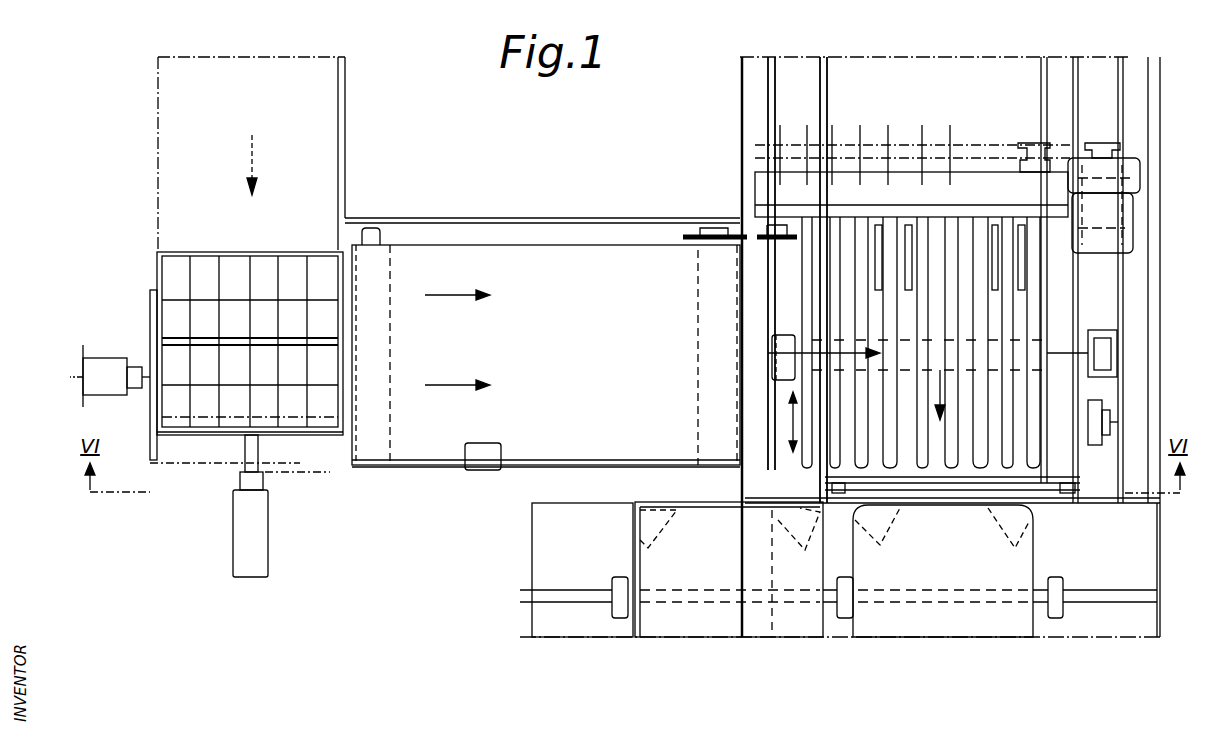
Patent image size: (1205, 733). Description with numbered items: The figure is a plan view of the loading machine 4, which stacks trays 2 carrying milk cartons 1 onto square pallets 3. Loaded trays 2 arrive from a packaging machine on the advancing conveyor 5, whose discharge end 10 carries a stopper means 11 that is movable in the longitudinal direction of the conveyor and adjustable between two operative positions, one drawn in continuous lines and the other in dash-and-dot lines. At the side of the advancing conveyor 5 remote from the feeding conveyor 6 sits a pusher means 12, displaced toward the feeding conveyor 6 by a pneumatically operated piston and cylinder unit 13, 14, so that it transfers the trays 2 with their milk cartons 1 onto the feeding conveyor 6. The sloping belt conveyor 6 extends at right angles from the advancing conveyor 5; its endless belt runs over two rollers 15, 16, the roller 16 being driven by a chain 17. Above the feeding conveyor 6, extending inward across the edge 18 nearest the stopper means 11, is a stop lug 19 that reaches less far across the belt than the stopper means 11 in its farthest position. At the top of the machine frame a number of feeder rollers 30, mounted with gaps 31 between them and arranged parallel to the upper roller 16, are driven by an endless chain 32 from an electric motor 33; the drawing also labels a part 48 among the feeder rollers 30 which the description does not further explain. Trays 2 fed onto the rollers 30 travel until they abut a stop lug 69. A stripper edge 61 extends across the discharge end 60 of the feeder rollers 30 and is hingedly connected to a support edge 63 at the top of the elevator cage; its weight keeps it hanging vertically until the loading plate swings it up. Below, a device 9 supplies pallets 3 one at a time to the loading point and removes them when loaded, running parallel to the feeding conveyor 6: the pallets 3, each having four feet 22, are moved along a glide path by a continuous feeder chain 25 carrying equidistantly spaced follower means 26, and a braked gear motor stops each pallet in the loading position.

The milk cartons 1 is at (237, 268).
The tray 2 is at (175, 250).
The pallet 3 is at (695, 520).
The loading machine 4 is at (735, 150).
The advancing conveyor 5 is at (325, 125).
The feeding belt conveyor 6 is at (525, 262).
The pallet supplying device 9 is at (552, 590).
The discharge end 10 is at (323, 413).
The stopper means 11 is at (287, 440).
The pusher means 12 is at (152, 300).
The piston 13 is at (130, 365).
The cylinder 14 is at (100, 388).
The roller 15 is at (390, 240).
The driven roller 16 is at (707, 237).
The chain 17 is at (757, 235).
The edge 18 is at (430, 472).
The stop lug 19 is at (482, 470).
The feet 22 is at (655, 510).
The feeder chain 25 is at (1100, 590).
The follower means 26 is at (615, 585).
The feeder rollers 30 is at (965, 215).
The gaps 31 is at (908, 455).
The endless chain 32 is at (927, 238).
The electric motor 33 is at (1125, 240).
The guide pins 48 is at (908, 240).
The discharge end 60 is at (962, 455).
The stripper edge 61 is at (1035, 487).
The support edge 63 is at (1060, 478).
The stop lug 69 is at (1050, 310).